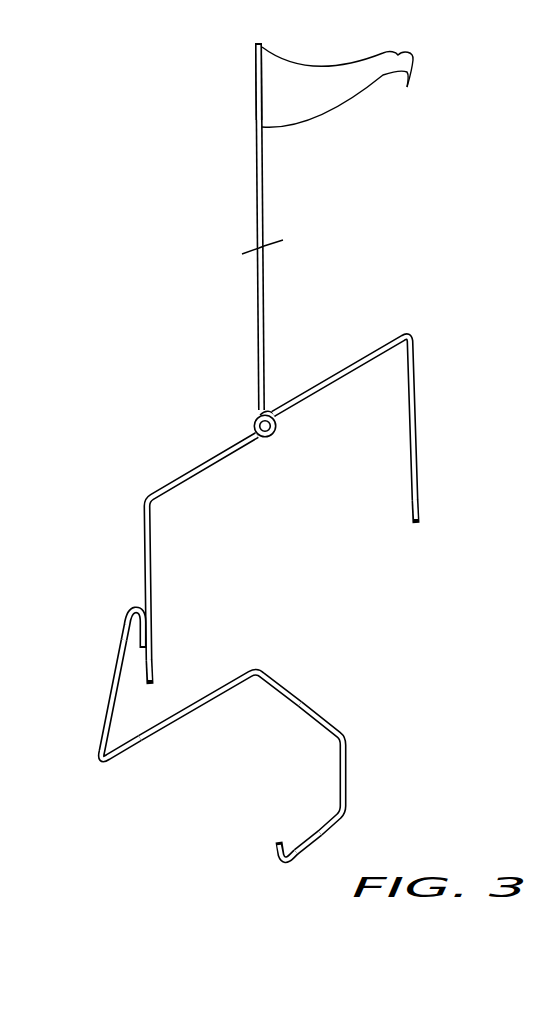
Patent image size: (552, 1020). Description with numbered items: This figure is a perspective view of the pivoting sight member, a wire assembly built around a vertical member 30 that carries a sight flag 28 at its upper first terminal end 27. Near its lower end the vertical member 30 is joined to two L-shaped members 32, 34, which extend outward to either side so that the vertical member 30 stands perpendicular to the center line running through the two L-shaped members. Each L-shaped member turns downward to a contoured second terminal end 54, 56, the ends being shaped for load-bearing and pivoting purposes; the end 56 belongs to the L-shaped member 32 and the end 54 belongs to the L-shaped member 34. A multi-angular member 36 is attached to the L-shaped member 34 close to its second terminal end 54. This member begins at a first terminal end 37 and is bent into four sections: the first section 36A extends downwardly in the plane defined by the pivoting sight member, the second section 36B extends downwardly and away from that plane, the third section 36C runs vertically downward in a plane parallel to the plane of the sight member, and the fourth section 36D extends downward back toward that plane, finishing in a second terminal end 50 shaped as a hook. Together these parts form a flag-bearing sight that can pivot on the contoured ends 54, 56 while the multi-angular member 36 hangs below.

The first terminal end 27 is at (256, 75).
The sight flag 28 is at (398, 55).
The vertical member 30 is at (277, 207).
The L-shaped member 32 is at (432, 376).
The L-shaped member 34 is at (176, 466).
The multi-angular member 36 is at (230, 715).
The first section 36A is at (107, 697).
The second section 36B is at (202, 707).
The third section 36C is at (346, 775).
The fourth section 36D is at (325, 838).
The first terminal end 37 is at (131, 608).
The second terminal end 50 is at (275, 850).
The second terminal end 54 is at (152, 678).
The second terminal end 56 is at (425, 520).